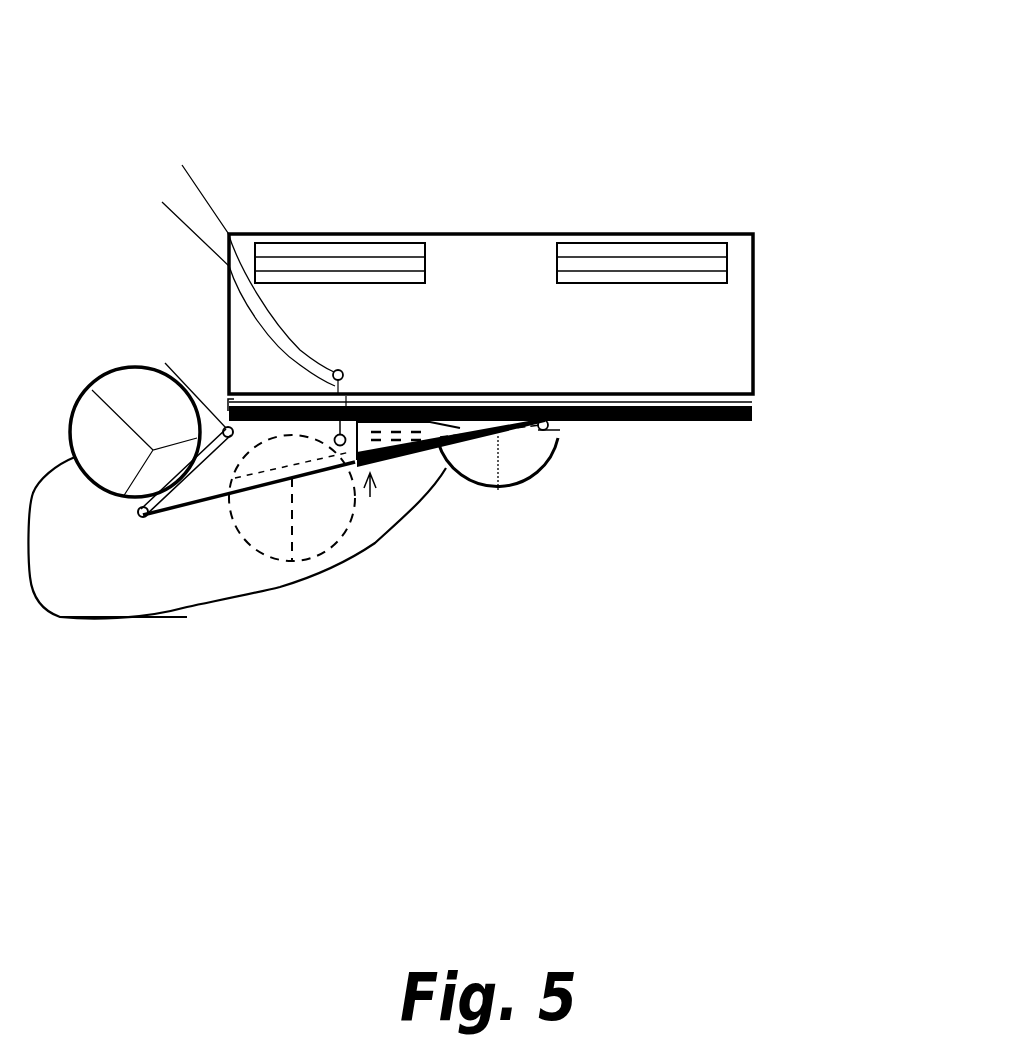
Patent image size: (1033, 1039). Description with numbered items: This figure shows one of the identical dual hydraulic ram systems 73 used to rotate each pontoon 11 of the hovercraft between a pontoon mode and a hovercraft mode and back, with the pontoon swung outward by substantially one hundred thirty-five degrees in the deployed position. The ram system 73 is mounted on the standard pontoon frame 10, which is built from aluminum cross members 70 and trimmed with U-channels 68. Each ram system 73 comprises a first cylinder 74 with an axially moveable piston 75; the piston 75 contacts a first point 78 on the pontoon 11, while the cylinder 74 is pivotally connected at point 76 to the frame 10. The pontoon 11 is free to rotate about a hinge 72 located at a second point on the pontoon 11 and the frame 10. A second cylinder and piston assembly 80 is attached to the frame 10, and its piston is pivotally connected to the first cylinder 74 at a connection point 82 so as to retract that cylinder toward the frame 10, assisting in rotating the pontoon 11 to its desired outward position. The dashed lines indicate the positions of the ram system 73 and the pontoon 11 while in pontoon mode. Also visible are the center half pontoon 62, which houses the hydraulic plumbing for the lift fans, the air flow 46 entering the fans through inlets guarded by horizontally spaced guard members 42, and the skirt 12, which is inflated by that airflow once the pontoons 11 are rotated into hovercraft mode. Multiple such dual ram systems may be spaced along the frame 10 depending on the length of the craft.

The frame 10 is at (727, 403).
The pontoon 11 is at (87, 483).
The skirt 12 is at (183, 615).
The guard members 42 is at (278, 272).
The air flow 46 is at (413, 245).
The center half pontoon 62 is at (508, 497).
The U-channels 68 is at (225, 402).
The cross members 70 is at (652, 422).
The hinge 72 is at (165, 363).
The dual hydraulic ram system 73 is at (392, 470).
The first cylinder 74 is at (418, 470).
The piston 75 is at (195, 503).
The pivot point 76 is at (545, 431).
The first point 78 is at (140, 518).
The second cylinder and piston assembly 80 is at (238, 351).
The pin 82 is at (257, 282).